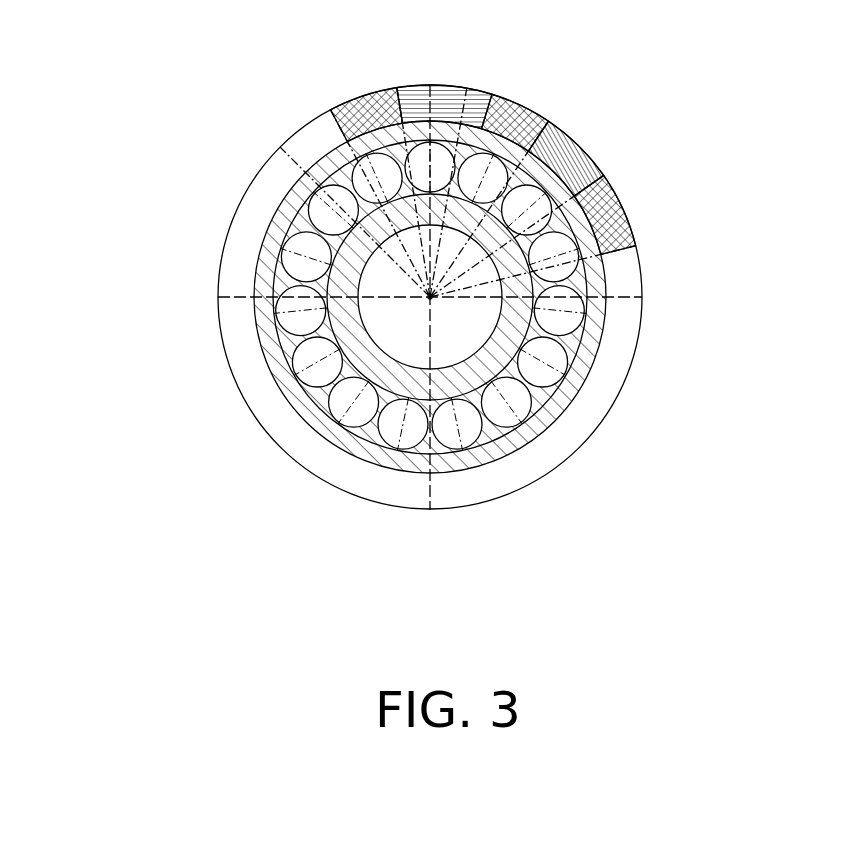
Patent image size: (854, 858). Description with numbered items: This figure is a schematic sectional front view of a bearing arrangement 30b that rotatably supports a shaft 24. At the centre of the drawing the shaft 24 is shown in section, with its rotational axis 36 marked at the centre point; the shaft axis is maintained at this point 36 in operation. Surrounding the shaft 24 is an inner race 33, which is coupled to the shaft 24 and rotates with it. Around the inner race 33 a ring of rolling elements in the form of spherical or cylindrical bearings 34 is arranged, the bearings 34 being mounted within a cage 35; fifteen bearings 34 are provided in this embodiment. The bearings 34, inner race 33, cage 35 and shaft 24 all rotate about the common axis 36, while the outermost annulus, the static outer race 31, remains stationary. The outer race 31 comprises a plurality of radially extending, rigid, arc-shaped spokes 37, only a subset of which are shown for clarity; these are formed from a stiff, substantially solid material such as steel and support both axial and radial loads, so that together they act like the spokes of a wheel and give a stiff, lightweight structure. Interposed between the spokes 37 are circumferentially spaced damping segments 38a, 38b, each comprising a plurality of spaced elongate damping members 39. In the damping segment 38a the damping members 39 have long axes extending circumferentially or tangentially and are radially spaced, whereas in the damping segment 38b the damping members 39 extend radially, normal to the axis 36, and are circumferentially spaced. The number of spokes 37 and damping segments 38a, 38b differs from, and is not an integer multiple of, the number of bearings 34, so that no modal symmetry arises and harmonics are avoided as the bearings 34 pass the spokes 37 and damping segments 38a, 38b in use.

The bearing arrangement 30b is at (197, 388).
The outer race 31 is at (637, 338).
The inner race 33 is at (607, 397).
The cage 35 is at (597, 278).
The axis 36 is at (430, 297).
The input shaft 24 is at (458, 352).
The bearings 34 is at (515, 420).
The spokes 37 is at (345, 110).
The damping segment 38a is at (456, 104).
The damping members 39 is at (597, 146).
The damping segment 38b is at (607, 186).